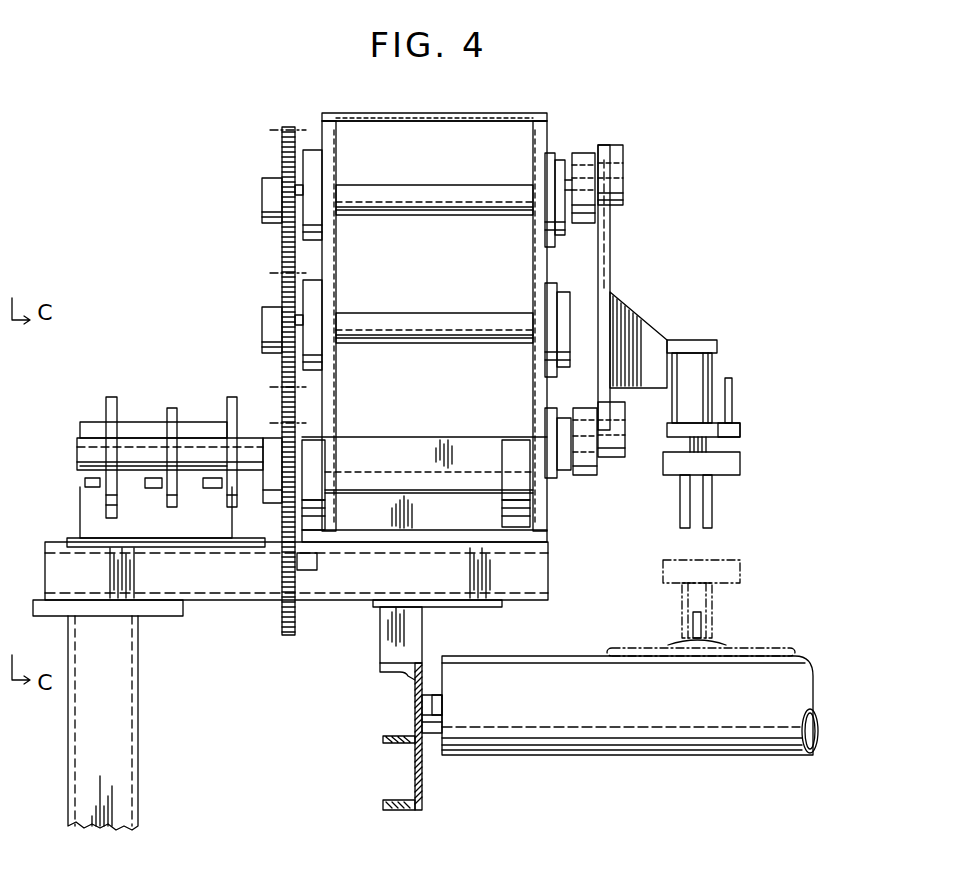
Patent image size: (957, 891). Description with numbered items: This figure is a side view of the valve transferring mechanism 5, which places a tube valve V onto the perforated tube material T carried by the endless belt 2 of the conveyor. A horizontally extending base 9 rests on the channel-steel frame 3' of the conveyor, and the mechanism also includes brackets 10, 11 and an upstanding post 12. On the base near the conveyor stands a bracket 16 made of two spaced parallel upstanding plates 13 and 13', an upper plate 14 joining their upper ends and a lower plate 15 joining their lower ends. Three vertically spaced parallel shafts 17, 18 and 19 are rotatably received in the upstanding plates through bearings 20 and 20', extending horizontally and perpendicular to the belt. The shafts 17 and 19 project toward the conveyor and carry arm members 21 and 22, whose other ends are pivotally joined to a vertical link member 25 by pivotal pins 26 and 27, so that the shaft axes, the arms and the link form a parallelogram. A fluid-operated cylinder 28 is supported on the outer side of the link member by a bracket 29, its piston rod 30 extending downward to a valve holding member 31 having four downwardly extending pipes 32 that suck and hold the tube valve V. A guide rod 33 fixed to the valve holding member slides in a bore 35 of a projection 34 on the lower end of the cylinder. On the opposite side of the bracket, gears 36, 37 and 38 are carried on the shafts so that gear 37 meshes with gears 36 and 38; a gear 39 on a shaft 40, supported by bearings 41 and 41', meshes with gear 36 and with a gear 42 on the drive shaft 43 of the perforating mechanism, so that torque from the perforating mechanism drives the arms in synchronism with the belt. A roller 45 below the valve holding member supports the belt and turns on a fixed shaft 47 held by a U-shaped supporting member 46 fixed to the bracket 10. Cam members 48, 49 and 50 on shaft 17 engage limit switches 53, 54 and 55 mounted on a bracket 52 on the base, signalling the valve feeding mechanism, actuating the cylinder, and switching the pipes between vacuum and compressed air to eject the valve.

The endless belt 2 is at (552, 654).
The frame 3' is at (423, 738).
The valve transferring mechanism 5 is at (640, 262).
The base 9 is at (216, 590).
The bracket 10 is at (398, 734).
The bracket 11 is at (380, 648).
The upstanding post 12 is at (128, 786).
The upstanding plate 13 is at (562, 314).
The upstanding plate 13' is at (327, 304).
The upper plate 14 is at (410, 118).
The lower plate 15 is at (548, 536).
The bracket 16 is at (478, 115).
The shaft 17 is at (575, 460).
The shaft 18 is at (429, 317).
The shaft 19 is at (429, 187).
The bearing 20 is at (568, 251).
The bearing 20' is at (297, 233).
The arm member 21 is at (598, 468).
The arm member 22 is at (582, 225).
The link member 25 is at (611, 237).
The pivotal pin 26 is at (626, 428).
The pivotal pin 27 is at (624, 150).
The fluid-operated cylinder 28 is at (713, 365).
The bracket 29 is at (632, 310).
The piston rod 30 is at (688, 445).
The valve holding member 31 is at (741, 466).
The pipes 32 is at (713, 505).
The guide rod 33 is at (733, 390).
The projection 34 is at (741, 436).
The bore 35 is at (741, 428).
The gear 36 is at (282, 390).
The gear 37 is at (280, 294).
The gear 38 is at (280, 154).
The gear 39 is at (262, 438).
The shaft 40 is at (384, 474).
The bearing 41 is at (507, 466).
The bearing 41' is at (343, 467).
The gear 42 is at (296, 620).
The drive shaft 43 is at (318, 560).
The roller 45 is at (600, 758).
The U-shaped supporting member 46 is at (432, 736).
The fixed shaft 47 is at (437, 690).
The cam member 48 is at (114, 395).
The cam member 49 is at (174, 406).
The cam member 50 is at (232, 395).
The bracket 52 is at (80, 522).
The limit switch 53 is at (86, 482).
The limit switch 54 is at (150, 490).
The limit switch 55 is at (212, 490).
The tube valve V is at (722, 640).
The tube material T is at (796, 648).